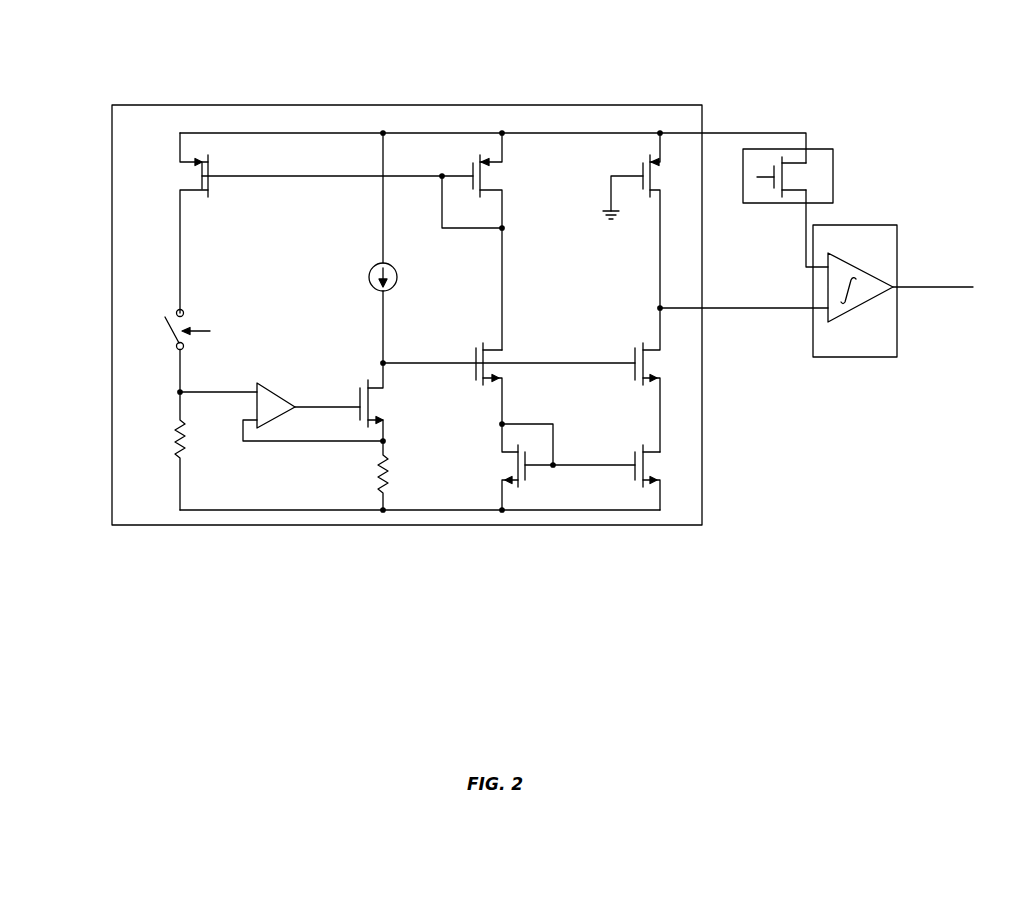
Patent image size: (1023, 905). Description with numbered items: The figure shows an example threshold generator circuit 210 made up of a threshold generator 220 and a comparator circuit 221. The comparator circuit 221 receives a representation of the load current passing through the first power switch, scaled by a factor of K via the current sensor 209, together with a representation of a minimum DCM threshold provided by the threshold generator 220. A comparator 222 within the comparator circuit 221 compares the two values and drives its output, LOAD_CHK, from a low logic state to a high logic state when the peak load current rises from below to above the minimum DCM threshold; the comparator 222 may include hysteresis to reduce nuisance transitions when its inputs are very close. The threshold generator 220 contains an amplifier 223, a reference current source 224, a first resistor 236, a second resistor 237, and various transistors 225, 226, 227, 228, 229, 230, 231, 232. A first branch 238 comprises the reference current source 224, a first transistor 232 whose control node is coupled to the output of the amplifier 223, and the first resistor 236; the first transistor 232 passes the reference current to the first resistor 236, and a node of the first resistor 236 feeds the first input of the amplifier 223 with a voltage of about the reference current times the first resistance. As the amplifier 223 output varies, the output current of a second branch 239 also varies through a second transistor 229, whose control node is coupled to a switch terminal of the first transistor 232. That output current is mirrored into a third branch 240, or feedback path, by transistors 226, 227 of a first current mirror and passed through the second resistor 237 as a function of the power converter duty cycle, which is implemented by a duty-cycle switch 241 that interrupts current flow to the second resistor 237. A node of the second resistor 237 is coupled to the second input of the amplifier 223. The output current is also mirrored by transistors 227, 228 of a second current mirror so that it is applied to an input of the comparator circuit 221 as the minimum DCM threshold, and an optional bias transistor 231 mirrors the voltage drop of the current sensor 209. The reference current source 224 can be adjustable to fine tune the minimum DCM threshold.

The current sensor 209 is at (833, 178).
The threshold generator circuit 210 is at (367, 31).
The threshold generator 220 is at (210, 105).
The comparator circuit 221 is at (898, 350).
The comparator 222 is at (867, 300).
The amplifier 223 is at (280, 393).
The reference current source 224 is at (372, 270).
The transistor 225 is at (211, 186).
The transistor of first current mirror 226 is at (483, 180).
The transistor of first and second current mirrors 227 is at (527, 472).
The transistor of second current mirror 228 is at (636, 472).
The second transistor 229 is at (475, 370).
The transistor 230 is at (635, 372).
The bias transistor 231 is at (647, 187).
The first transistor 232 is at (358, 400).
The first resistor 236 is at (380, 465).
The second resistor 237 is at (175, 426).
The first branch 238 is at (389, 330).
The second branch 239 is at (507, 302).
The third branch 240 is at (176, 272).
The duty-cycle switch 241 is at (170, 322).